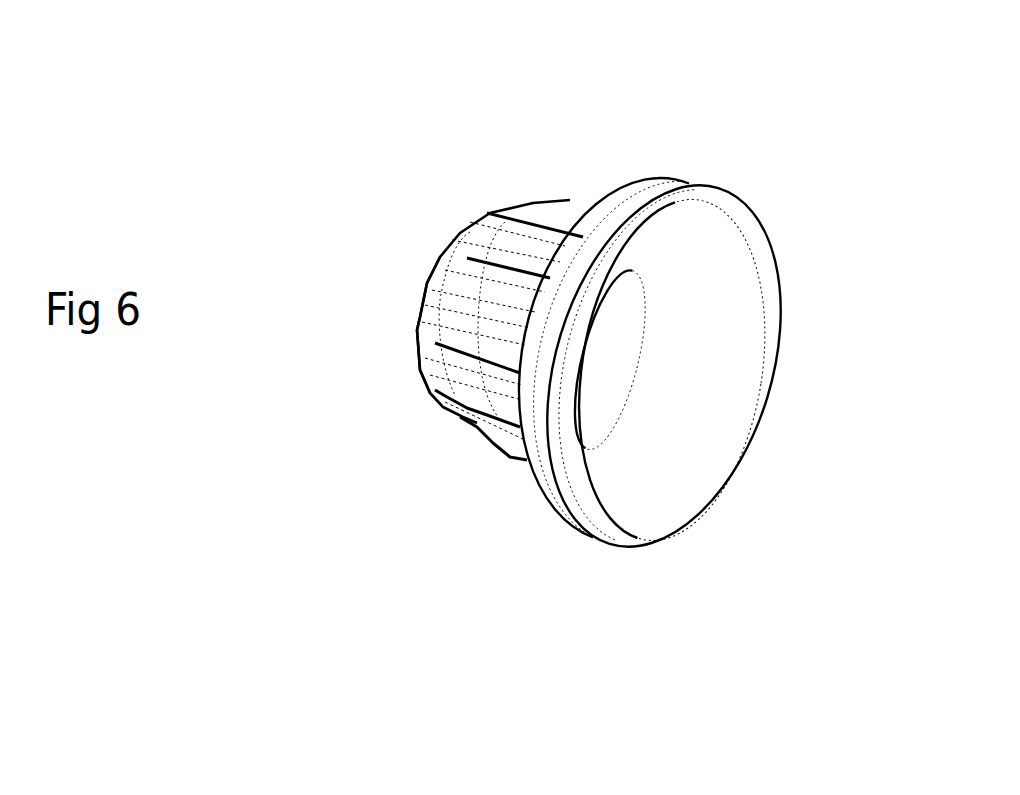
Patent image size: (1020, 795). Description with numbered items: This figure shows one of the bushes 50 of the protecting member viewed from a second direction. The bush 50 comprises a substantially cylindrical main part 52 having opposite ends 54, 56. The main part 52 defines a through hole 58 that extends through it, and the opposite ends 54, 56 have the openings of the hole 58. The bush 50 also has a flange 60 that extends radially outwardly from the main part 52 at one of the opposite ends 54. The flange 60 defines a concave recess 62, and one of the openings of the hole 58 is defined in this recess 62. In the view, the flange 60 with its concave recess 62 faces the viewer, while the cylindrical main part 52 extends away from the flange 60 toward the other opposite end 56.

The bush 50 is at (425, 248).
The main part 52 is at (562, 220).
The opposite end 54 is at (517, 380).
The opposite end 56 is at (417, 318).
The through hole 58 is at (612, 358).
The flange 60 is at (731, 198).
The concave recess 62 is at (722, 330).